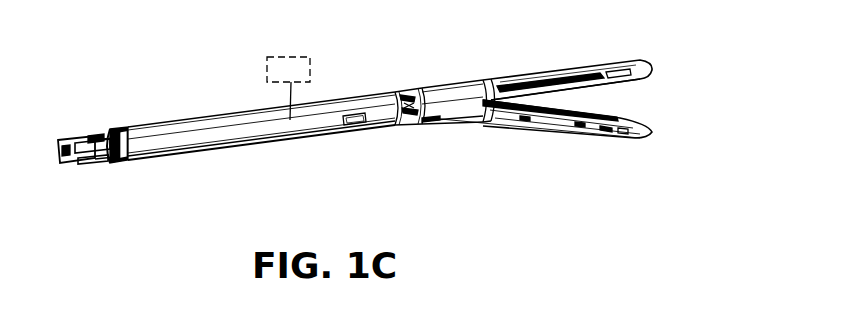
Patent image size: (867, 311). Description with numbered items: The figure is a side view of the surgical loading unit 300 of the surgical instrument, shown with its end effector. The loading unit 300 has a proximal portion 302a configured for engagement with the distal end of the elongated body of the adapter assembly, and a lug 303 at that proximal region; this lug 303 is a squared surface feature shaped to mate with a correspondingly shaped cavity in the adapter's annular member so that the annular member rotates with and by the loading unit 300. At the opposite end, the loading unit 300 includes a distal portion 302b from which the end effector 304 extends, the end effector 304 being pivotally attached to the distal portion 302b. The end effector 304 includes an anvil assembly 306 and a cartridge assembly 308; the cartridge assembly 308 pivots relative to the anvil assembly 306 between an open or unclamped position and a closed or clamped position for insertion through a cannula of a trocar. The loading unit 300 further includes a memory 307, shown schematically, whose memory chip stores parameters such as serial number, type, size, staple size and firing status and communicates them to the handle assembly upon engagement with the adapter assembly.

The loading unit 300 is at (308, 152).
The proximal portion 302a is at (122, 127).
The distal portion 302b is at (410, 93).
The lug 303 is at (93, 137).
The end effector 304 is at (517, 134).
The anvil assembly 306 is at (644, 58).
The memory 307 is at (306, 50).
The cartridge assembly 308 is at (622, 138).